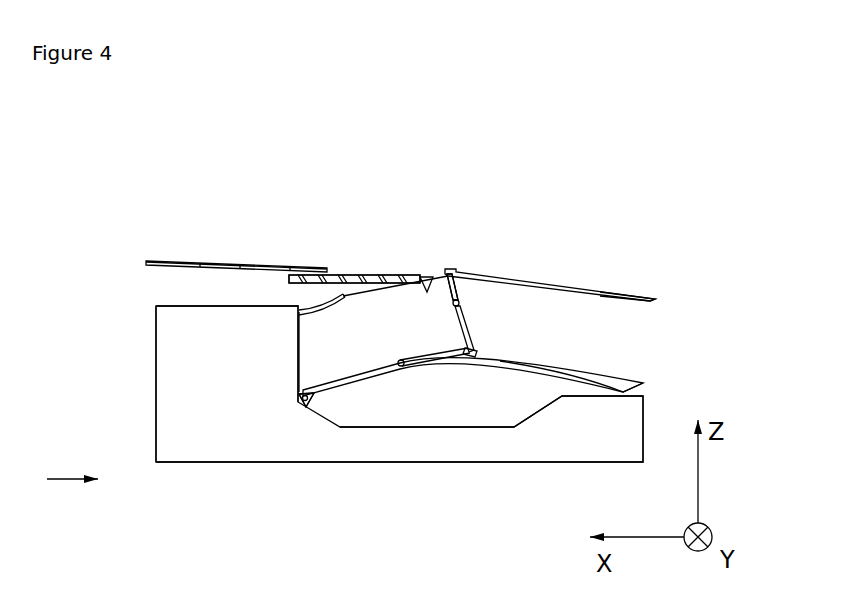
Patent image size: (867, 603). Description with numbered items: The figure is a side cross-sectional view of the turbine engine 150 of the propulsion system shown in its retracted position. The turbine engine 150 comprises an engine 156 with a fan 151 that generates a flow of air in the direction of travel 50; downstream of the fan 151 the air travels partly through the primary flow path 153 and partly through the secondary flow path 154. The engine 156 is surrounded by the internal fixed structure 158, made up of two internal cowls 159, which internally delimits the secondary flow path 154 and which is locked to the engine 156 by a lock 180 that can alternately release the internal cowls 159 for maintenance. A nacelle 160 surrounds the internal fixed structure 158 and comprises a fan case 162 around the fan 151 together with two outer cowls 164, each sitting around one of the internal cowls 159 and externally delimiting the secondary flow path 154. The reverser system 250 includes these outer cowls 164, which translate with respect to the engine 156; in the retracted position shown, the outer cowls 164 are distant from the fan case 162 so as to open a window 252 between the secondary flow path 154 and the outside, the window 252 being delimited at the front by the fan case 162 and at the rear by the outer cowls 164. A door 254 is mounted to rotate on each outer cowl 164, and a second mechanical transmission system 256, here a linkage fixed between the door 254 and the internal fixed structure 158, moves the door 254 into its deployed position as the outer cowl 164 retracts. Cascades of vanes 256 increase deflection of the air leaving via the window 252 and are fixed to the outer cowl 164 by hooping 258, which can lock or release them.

The direction of travel 50 is at (72, 496).
The turbine engine 150 is at (575, 211).
The fan 151 is at (185, 395).
The primary flow path 153 is at (313, 450).
The secondary flow path 154 is at (360, 356).
The engine 156 is at (137, 357).
The internal fixed structure 158 is at (622, 325).
The internal cowl 159 is at (593, 378).
The nacelle 160 is at (170, 180).
The fan case 162 is at (152, 262).
The outer cowl 164 is at (610, 287).
The lock 180 is at (302, 402).
The reverser system 250 is at (468, 185).
The window 252 is at (363, 175).
The door 254 is at (457, 303).
The second mechanical transmission system 256 is at (353, 274).
The hooping 258 is at (430, 278).